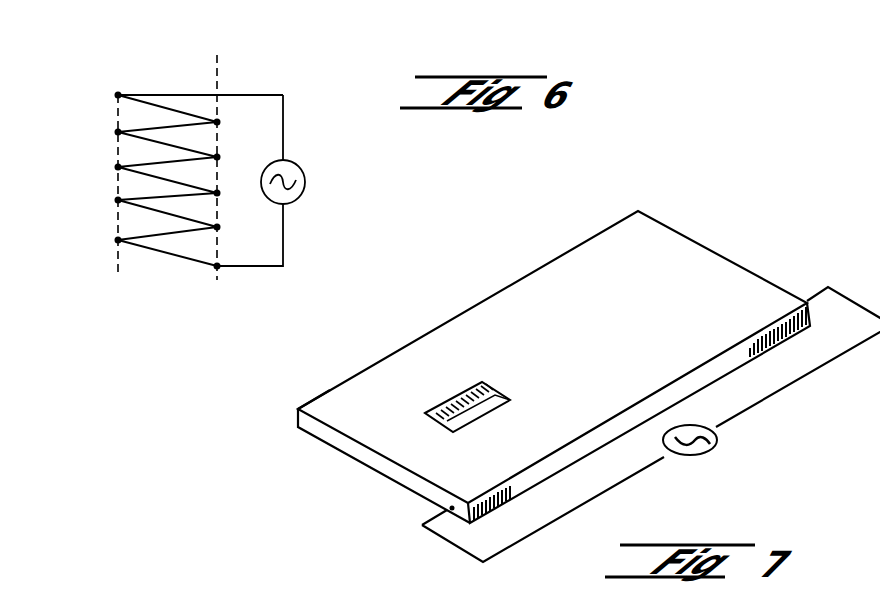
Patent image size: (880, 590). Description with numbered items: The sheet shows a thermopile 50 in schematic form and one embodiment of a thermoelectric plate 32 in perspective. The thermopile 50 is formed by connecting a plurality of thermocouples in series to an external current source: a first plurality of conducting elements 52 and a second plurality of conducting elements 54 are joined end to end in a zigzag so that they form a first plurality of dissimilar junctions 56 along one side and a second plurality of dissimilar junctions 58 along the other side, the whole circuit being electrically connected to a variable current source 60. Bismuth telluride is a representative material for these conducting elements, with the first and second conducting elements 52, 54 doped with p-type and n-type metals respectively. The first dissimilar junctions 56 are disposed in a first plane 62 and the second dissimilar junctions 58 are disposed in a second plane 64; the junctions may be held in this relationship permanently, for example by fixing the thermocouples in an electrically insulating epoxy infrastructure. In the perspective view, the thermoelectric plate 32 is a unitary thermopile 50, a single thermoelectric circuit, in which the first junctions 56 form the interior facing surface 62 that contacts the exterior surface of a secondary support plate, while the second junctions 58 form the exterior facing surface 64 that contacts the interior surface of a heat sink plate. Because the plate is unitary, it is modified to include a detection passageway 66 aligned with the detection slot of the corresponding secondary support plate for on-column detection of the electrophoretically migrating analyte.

In FIG. 7, the thermoelectric plate 32 is at (716, 216).
In FIG. 6, the thermopile 50 is at (278, 50).
In FIG. 6, the first plurality of conducting elements 52 is at (176, 94).
In FIG. 6, the second plurality of conducting elements 54 is at (190, 99).
In FIG. 6, the first plurality of dissimilar junctions 56 is at (110, 99).
In FIG. 6, the second plurality of dissimilar junctions 58 is at (253, 80).
In FIG. 7, the variable current source 60 is at (718, 440).
In FIG. 6, the first plane / interior facing surface 62 is at (118, 91).
In FIG. 7, the first plane / interior facing surface 62 is at (360, 463).
In FIG. 6, the second plane / exterior facing surface 64 is at (218, 273).
In FIG. 7, the second plane / exterior facing surface 64 is at (343, 412).
In FIG. 7, the detection passageway 66 is at (473, 410).